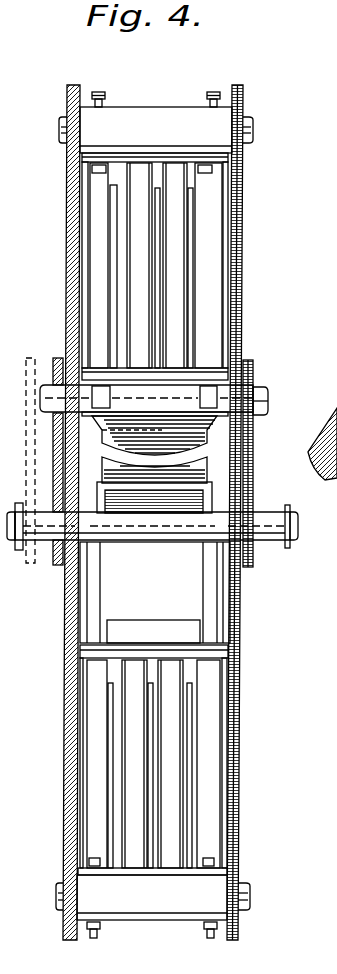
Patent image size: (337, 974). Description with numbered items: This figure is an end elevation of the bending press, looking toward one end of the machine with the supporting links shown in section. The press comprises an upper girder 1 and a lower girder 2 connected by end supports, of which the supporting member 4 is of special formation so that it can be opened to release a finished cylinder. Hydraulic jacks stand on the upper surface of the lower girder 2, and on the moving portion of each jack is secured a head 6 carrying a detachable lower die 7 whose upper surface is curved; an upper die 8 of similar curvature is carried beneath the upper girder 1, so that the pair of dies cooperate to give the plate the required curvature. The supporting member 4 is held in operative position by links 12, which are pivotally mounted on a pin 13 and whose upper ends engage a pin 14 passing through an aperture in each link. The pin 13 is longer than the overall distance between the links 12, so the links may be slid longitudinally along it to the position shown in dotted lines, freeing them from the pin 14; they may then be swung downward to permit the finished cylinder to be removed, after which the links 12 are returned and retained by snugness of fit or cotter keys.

The upper girder 1 is at (195, 237).
The lower girder 2 is at (192, 745).
The end support 4 is at (66, 286).
The head 6 is at (207, 493).
The lower die 7 is at (110, 468).
The upper die 8 is at (188, 443).
The link 12 is at (253, 452).
The pin 13 is at (267, 533).
The pin 14 is at (262, 385).